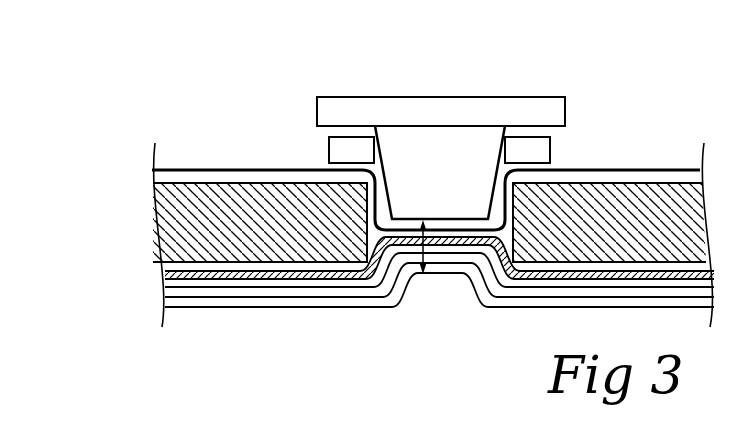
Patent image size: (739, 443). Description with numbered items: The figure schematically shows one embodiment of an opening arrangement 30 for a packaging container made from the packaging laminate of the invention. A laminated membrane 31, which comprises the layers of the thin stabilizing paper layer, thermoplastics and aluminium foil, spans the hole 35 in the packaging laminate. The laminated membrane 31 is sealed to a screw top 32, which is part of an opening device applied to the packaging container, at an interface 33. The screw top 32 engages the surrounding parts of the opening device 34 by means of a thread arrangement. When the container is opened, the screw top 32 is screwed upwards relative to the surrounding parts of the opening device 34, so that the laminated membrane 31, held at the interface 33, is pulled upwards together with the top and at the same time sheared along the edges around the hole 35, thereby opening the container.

The opening arrangement 30 is at (368, 235).
The laminated membrane 31 is at (401, 253).
The screw top 32 is at (450, 119).
The interface 33 is at (454, 220).
The surrounding parts of the opening device 34 is at (337, 147).
The hole 35 is at (386, 223).